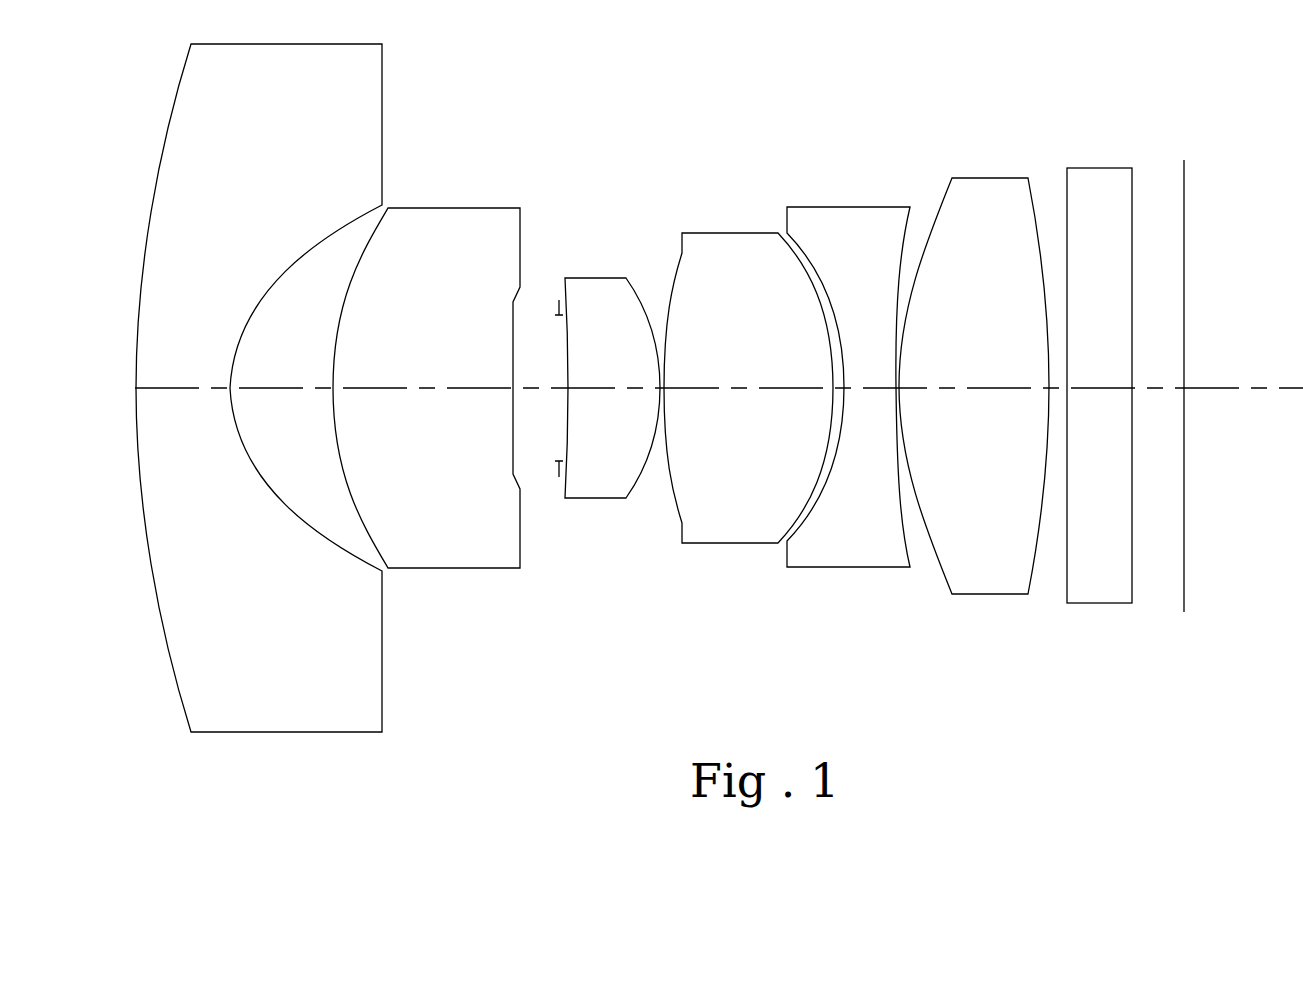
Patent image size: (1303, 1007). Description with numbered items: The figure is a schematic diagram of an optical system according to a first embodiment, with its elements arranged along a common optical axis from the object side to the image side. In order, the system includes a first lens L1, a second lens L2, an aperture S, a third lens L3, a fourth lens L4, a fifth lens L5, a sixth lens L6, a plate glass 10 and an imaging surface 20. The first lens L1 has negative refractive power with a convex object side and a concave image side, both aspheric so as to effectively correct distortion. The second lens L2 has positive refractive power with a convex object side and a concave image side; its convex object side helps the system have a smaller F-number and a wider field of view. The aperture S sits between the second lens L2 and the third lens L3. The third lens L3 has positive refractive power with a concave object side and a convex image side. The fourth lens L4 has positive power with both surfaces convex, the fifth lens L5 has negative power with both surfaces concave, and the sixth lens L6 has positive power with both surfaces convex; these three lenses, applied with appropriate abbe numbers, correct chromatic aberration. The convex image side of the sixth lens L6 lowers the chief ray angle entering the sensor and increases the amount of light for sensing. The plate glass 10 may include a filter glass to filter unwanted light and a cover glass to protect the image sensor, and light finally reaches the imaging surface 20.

The first lens L1 is at (286, 723).
The second lens L2 is at (468, 560).
The aperture S is at (561, 464).
The third lens L3 is at (601, 487).
The fourth lens L4 is at (736, 527).
The fifth lens L5 is at (857, 548).
The sixth lens L6 is at (992, 588).
The plate glass 10 is at (1108, 593).
The imaging surface 20 is at (1185, 593).